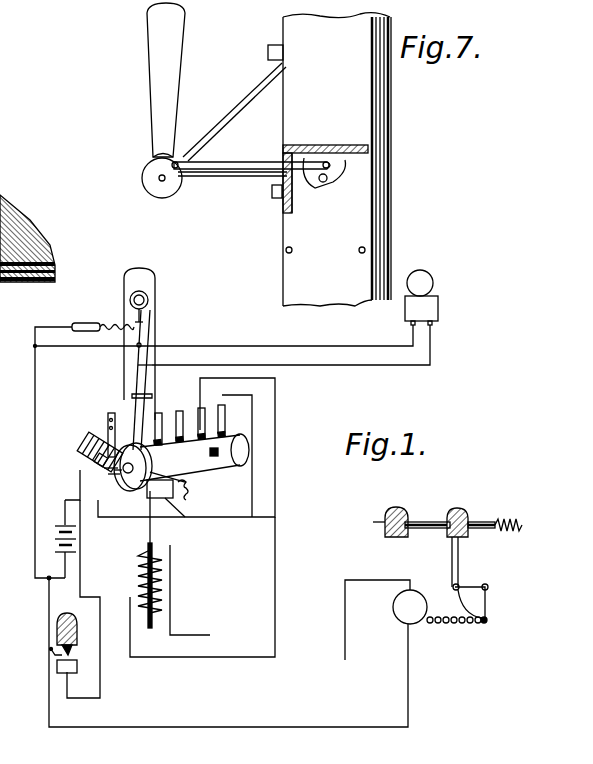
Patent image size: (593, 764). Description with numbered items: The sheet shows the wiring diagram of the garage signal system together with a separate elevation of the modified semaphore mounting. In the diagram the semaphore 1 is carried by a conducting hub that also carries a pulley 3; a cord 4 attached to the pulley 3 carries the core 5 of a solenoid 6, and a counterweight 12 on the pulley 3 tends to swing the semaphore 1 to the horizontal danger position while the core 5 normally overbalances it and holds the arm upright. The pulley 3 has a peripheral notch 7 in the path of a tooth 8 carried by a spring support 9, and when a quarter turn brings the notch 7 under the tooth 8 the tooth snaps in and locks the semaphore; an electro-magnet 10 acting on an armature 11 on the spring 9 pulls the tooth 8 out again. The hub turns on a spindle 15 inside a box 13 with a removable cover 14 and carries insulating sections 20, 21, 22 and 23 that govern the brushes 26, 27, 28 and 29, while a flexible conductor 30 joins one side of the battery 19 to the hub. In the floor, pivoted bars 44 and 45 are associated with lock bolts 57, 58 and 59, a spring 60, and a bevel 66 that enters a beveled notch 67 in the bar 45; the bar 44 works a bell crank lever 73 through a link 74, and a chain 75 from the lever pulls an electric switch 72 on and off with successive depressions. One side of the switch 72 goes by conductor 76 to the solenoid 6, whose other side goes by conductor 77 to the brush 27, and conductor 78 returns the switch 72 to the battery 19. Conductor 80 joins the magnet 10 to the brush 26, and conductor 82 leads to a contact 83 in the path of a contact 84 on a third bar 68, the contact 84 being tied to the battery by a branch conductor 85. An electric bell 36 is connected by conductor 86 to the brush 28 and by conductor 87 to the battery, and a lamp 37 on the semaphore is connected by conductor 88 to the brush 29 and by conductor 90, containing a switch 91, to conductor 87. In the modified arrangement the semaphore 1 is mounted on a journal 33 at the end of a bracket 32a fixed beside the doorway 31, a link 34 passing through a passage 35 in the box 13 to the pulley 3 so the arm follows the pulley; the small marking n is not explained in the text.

In FIG. 7, the semaphore 1 is at (158, 93).
In FIG. 1, the semaphore 1 is at (150, 322).
In FIG. 7, the pulley 3 is at (324, 184).
In FIG. 1, the pulley 3 is at (130, 492).
In FIG. 1, the cord or flexible strand 4 is at (152, 526).
In FIG. 1, the core 5 is at (160, 612).
In FIG. 1, the solenoid 6 is at (138, 560).
In FIG. 1, the peripheral notch 7 is at (133, 446).
In FIG. 1, the tooth 8 is at (110, 474).
In FIG. 1, the support 9 is at (111, 412).
In FIG. 1, the electro-magnet 10 is at (95, 438).
In FIG. 1, the armature 11 is at (104, 468).
In FIG. 1, the counterweight 12 is at (95, 458).
In FIG. 7, the box or casing 13 is at (333, 146).
In FIG. 7, the removable cover 14 is at (327, 276).
In FIG. 1, the spindle 15 is at (118, 474).
In FIG. 1, the battery 19 is at (60, 524).
In FIG. 1, the insulating strip 20 is at (248, 441).
In FIG. 1, the insulating block or strip 21 is at (228, 462).
In FIG. 1, the insulating strip or block 22 is at (206, 462).
In FIG. 1, the insulating strip or block 23 is at (167, 486).
In FIG. 1, the brush 26 is at (224, 418).
In FIG. 1, the brush 27 is at (203, 405).
In FIG. 1, the brush 28 is at (180, 408).
In FIG. 1, the brush 29 is at (160, 410).
In FIG. 1, the conductor 30 is at (184, 519).
In FIG. 7, the doorway 31 is at (370, 93).
In FIG. 7, the bracket 32a is at (237, 116).
In FIG. 7, the journal 33 is at (160, 182).
In FIG. 7, the link 34 is at (243, 161).
In FIG. 7, the passage 35 is at (280, 182).
In FIG. 1, the electric bell 36 is at (438, 310).
In FIG. 1, the electric lamp 37 is at (146, 296).
In FIG. 1, the bar 44 is at (470, 507).
In FIG. 1, the bar 45 is at (396, 506).
In FIG. 1, the lock bolt 57 is at (432, 528).
In FIG. 1, the lock bolt 58 is at (483, 528).
In FIG. 1, the lock bolt 59 is at (458, 507).
In FIG. 1, the spring 60 is at (508, 518).
In FIG. 1, the bevel 66 is at (418, 522).
In FIG. 1, the beveled notch 67 is at (375, 522).
In FIG. 1, the bar 68 is at (57, 630).
In FIG. 1, the electric switch 72 is at (394, 602).
In FIG. 1, the bell crank lever 73 is at (488, 600).
In FIG. 1, the link 74 is at (460, 566).
In FIG. 1, the chain or flexible connection 75 is at (456, 624).
In FIG. 1, the conductor 76 is at (345, 630).
In FIG. 1, the conductor 77 is at (276, 578).
In FIG. 1, the conductor 78 is at (48, 600).
In FIG. 1, the conductor 80 is at (275, 510).
In FIG. 1, the conductor 82 is at (100, 680).
In FIG. 1, the contact 83 is at (57, 668).
In FIG. 1, the contact 84 is at (72, 648).
In FIG. 1, the branch conductor 85 is at (50, 650).
In FIG. 1, the conductor 86 is at (384, 366).
In FIG. 1, the conductor 87 is at (273, 342).
In FIG. 1, the conductor 88 is at (138, 366).
In FIG. 1, the conductor 90 is at (48, 326).
In FIG. 1, the switch 91 is at (92, 318).
In FIG. 1, the contact segment n is at (240, 458).